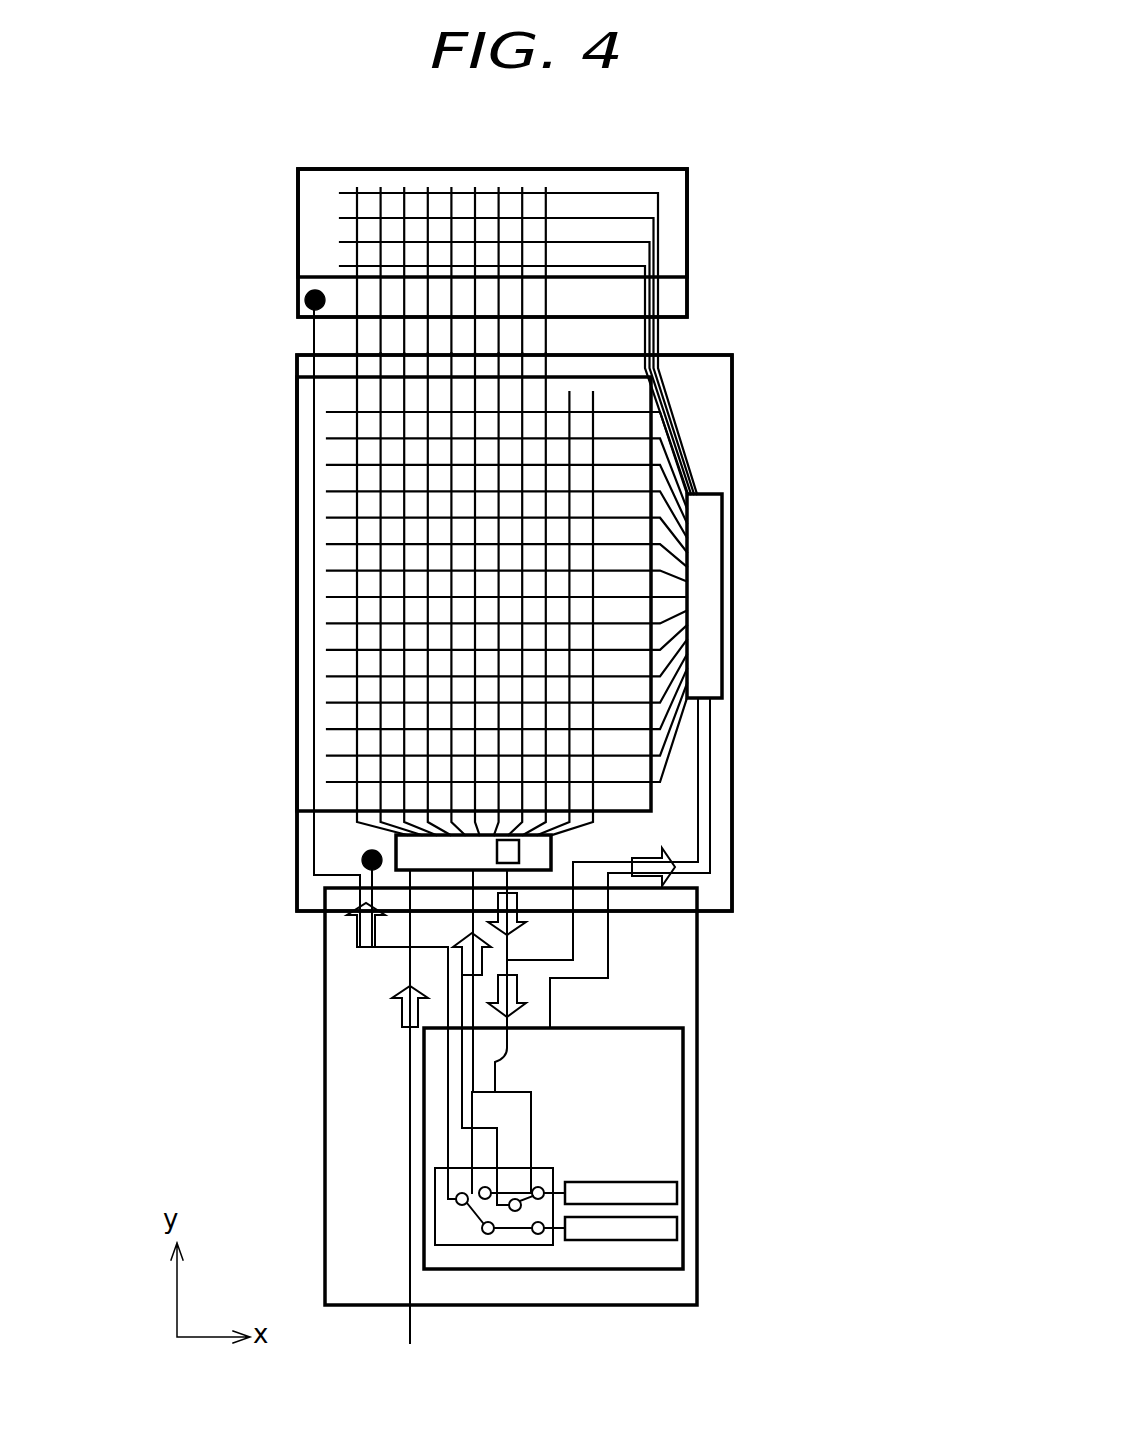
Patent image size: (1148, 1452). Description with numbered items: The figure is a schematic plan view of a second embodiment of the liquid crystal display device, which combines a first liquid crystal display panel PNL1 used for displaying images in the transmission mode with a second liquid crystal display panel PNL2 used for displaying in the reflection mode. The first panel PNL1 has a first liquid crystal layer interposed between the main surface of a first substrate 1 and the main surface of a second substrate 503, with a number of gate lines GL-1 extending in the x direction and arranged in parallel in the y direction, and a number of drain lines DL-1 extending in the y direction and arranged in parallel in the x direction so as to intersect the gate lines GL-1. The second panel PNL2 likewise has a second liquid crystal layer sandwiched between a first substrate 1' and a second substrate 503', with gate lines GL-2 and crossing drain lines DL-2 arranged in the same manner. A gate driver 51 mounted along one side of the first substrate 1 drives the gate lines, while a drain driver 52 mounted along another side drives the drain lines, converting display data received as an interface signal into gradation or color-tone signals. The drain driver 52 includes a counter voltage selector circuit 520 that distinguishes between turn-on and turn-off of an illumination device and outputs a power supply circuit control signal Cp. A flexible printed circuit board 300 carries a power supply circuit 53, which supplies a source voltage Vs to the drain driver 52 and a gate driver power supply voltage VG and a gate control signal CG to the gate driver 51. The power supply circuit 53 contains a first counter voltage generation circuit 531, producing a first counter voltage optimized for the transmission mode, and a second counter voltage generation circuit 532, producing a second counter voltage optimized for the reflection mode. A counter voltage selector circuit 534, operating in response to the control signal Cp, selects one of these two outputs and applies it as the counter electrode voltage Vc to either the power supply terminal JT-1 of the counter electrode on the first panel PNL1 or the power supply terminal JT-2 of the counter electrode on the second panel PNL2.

The first substrate 1 is at (547, 633).
The first substrate 1' is at (527, 243).
The second substrate 503 is at (557, 594).
The second substrate 503' is at (537, 223).
The gate driver 51 is at (708, 580).
The drain driver 52 is at (407, 852).
The counter voltage selector circuit 520 is at (508, 853).
The power supply circuit 53 is at (683, 1062).
The flexible printed circuit board 300 is at (697, 1105).
The first counter voltage generation circuit 531 is at (677, 1193).
The second counter voltage generation circuit 532 is at (677, 1228).
The counter voltage selector circuit 534 is at (480, 1245).
The first liquid crystal display panel PNL1 is at (294, 612).
The second liquid crystal display panel PNL2 is at (294, 207).
The drain lines DL-1 is at (423, 455).
The drain lines DL-2 is at (427, 205).
The gate lines GL-1 is at (343, 465).
The gate lines GL-2 is at (343, 242).
The power supply terminal JT-1 is at (362, 860).
The power supply terminal JT-2 is at (305, 300).
The gate driver power supply voltage VG is at (710, 722).
The gate control signal CG is at (698, 774).
The counter electrode voltage Vc is at (347, 930).
The source voltage Vs is at (462, 960).
The power supply circuit control signal Cp is at (518, 993).